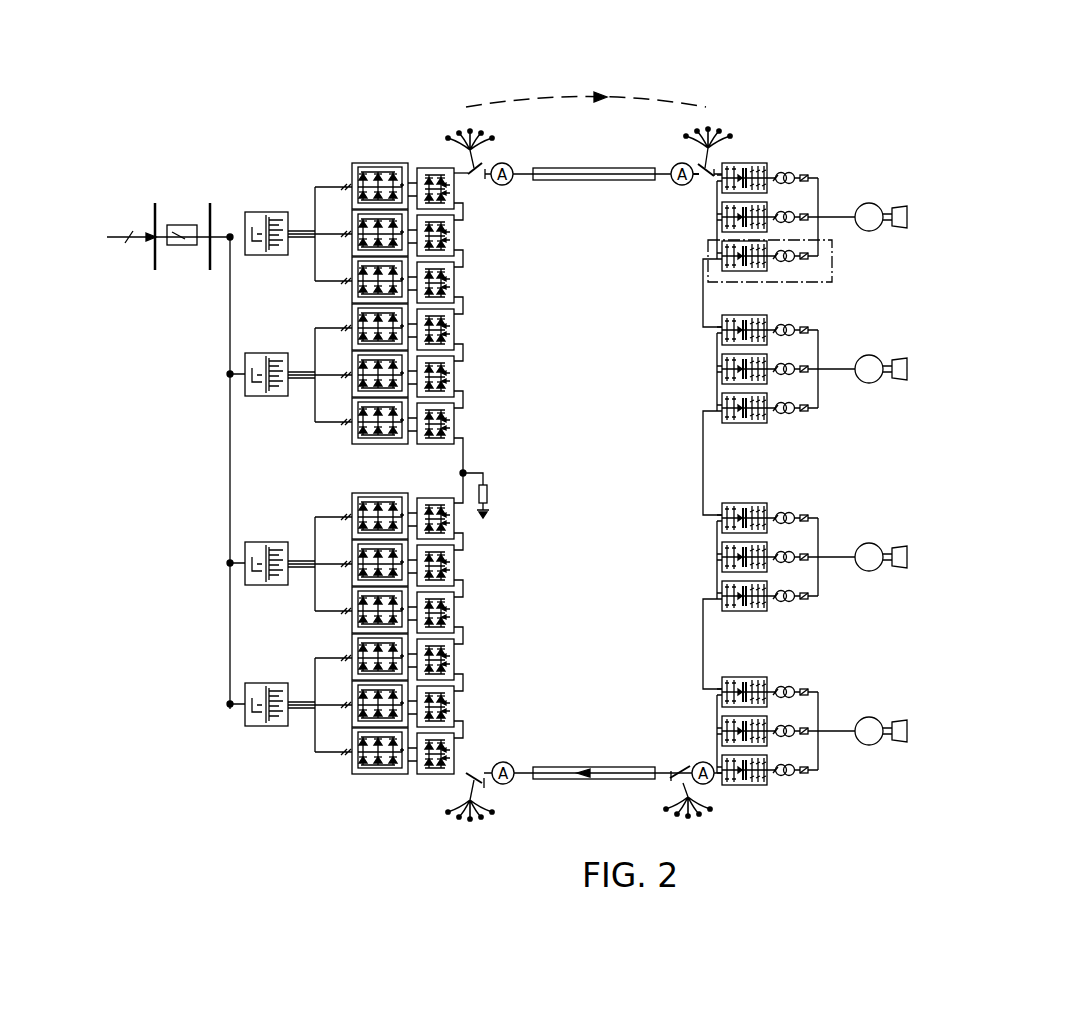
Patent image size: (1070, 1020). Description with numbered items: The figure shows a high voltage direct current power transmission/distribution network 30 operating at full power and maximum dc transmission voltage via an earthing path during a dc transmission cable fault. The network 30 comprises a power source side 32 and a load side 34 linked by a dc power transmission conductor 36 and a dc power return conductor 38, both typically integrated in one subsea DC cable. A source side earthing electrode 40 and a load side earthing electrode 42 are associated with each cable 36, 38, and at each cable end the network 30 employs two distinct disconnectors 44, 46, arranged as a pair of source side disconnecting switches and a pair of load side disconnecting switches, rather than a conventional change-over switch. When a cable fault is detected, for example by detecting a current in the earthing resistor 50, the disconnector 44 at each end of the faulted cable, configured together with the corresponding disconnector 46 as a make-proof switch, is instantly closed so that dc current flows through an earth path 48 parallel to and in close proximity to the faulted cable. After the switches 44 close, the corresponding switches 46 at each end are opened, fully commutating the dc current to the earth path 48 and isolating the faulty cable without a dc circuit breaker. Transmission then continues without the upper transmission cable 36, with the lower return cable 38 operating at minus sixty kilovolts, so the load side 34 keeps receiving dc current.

The high voltage direct current power transmission/distribution network 30 is at (988, 120).
The power source side 32 is at (291, 164).
The load side 34 is at (882, 178).
The dc power transmission conductor 36 is at (597, 183).
The dc power return conductor 38 is at (599, 783).
The source side earthing electrode 40 is at (452, 130).
The load side earthing electrode 42 is at (731, 136).
The disconnecting switch 44 is at (480, 181).
The disconnecting switch 46 is at (594, 475).
The earth path 48 is at (704, 106).
The earthing resistor 50 is at (492, 503).